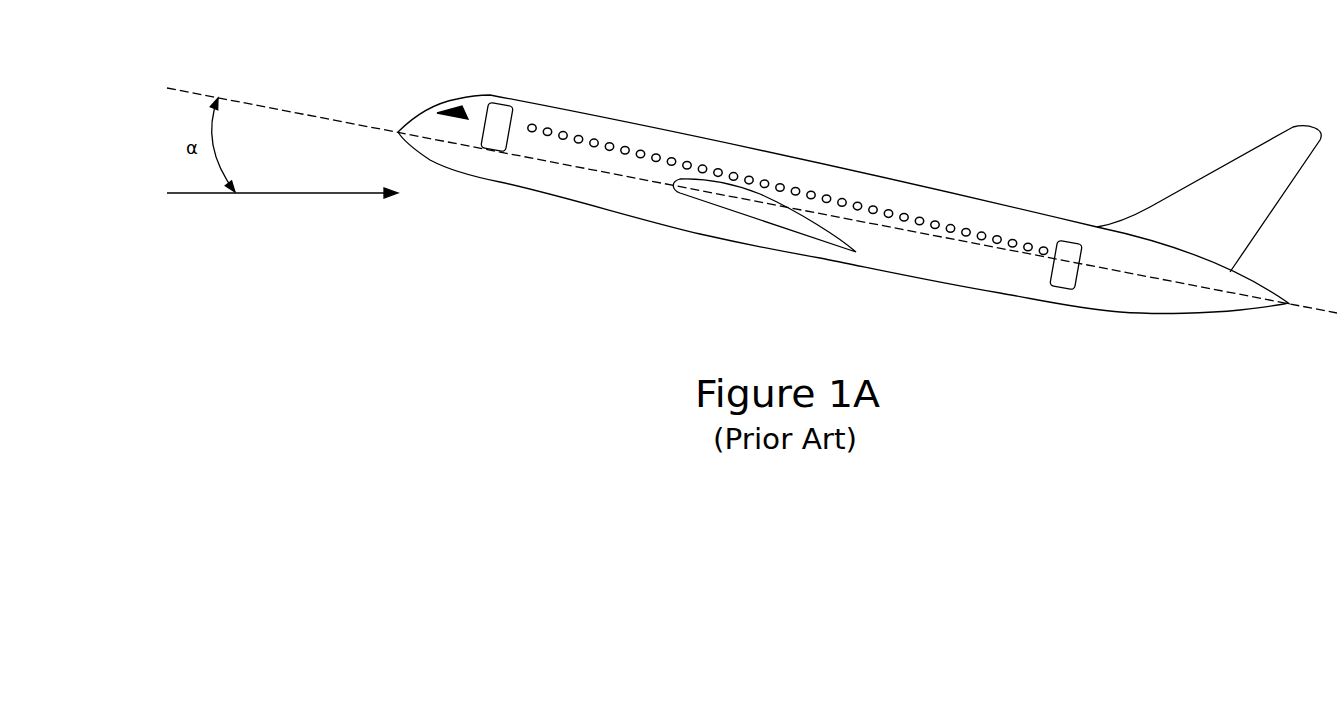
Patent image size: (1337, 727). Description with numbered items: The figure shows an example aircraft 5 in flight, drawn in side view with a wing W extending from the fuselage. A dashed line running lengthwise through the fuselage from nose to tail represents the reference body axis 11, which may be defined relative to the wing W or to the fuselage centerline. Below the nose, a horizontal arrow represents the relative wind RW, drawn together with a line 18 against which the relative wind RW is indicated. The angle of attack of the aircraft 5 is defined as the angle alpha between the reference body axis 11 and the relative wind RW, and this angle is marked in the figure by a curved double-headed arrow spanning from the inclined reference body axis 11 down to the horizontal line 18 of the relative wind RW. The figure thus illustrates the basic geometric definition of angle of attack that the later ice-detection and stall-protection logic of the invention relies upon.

The aircraft 5 is at (620, 132).
The reference body axis 11 is at (209, 72).
The flight path / relative wind direction line 18 is at (187, 205).
The wing W is at (703, 200).
The relative wind RW is at (297, 193).